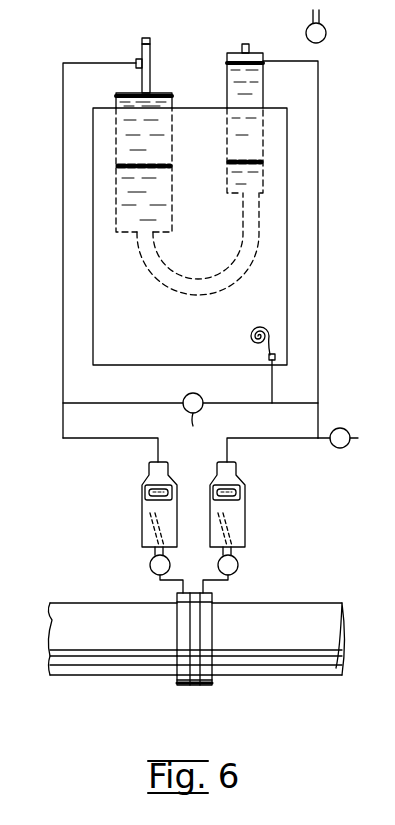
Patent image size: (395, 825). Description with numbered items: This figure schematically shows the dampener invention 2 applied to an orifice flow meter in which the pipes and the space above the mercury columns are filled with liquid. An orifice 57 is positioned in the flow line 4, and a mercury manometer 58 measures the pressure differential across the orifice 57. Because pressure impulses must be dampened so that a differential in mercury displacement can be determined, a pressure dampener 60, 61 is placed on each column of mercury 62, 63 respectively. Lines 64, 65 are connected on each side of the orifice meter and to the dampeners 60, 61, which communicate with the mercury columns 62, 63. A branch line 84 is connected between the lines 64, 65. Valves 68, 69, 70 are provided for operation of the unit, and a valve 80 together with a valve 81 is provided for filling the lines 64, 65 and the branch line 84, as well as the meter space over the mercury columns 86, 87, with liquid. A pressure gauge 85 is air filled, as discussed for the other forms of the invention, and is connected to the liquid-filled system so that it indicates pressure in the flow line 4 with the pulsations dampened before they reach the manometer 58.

The dampener 2 is at (208, 510).
The flow line 4 is at (290, 613).
The orifice 57 is at (200, 686).
The mercury manometer 58 is at (193, 261).
The pressure dampener 60 is at (142, 516).
The pressure dampener 61 is at (245, 500).
The mercury column 62 is at (125, 200).
The mercury column 63 is at (263, 172).
The line 64 is at (63, 342).
The line 65 is at (318, 278).
The valve 68 is at (149, 567).
The valve 69 is at (239, 568).
The valve 70 is at (193, 434).
The valve 80 is at (327, 34).
The valve 81 is at (339, 428).
The branch line 84 is at (133, 403).
The pressure gauge 85 is at (272, 318).
The meter space over the mercury column 86 is at (180, 80).
The meter space over the mercury column 87 is at (263, 68).